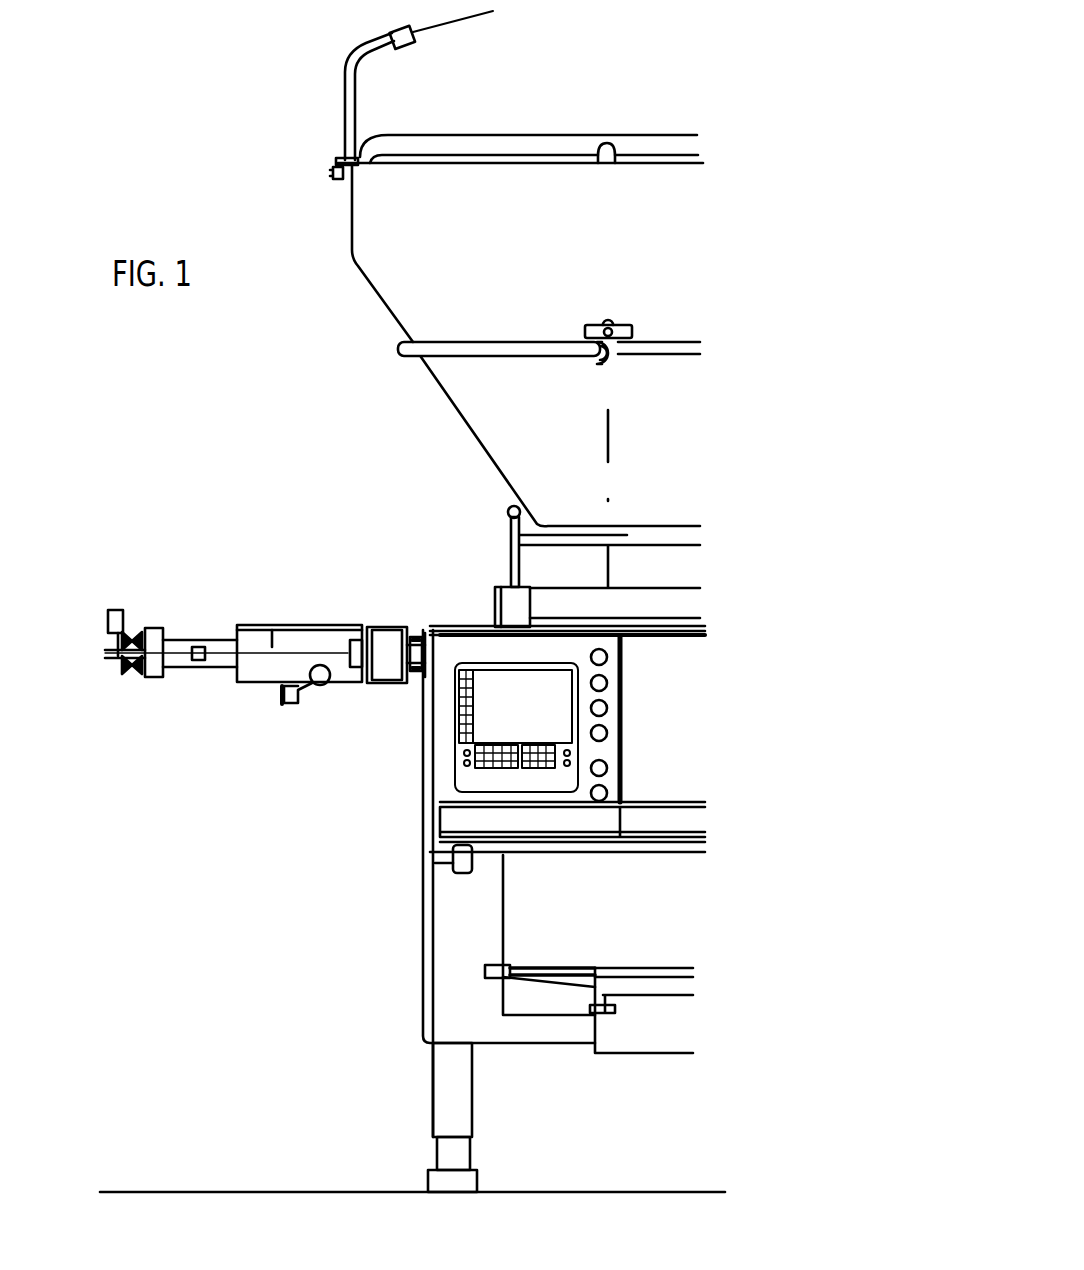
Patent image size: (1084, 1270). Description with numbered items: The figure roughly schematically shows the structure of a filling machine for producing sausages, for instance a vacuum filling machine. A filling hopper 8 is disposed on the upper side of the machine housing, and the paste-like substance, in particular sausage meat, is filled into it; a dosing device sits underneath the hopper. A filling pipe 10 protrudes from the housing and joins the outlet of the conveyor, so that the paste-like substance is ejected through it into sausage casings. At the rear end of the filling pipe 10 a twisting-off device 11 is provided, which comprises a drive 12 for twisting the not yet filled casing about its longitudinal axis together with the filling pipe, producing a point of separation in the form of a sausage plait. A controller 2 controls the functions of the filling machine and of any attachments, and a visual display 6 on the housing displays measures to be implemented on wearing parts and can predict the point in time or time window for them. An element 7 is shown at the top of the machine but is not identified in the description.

The controller 2 is at (612, 752).
The visual display 6 is at (498, 721).
The sensor arm 7 is at (342, 34).
The filling hopper 8 is at (372, 289).
The filling pipe 10 is at (276, 642).
The twisting-off device 11 is at (162, 628).
The drive 12 is at (388, 633).